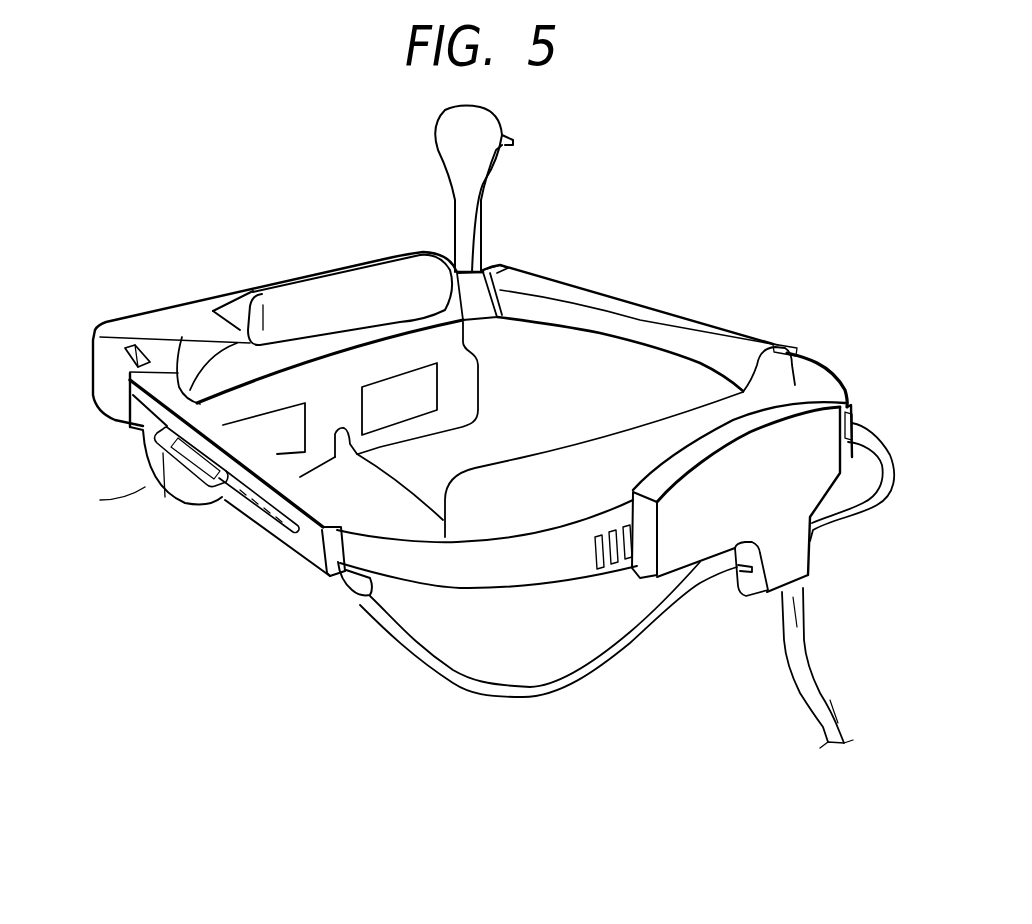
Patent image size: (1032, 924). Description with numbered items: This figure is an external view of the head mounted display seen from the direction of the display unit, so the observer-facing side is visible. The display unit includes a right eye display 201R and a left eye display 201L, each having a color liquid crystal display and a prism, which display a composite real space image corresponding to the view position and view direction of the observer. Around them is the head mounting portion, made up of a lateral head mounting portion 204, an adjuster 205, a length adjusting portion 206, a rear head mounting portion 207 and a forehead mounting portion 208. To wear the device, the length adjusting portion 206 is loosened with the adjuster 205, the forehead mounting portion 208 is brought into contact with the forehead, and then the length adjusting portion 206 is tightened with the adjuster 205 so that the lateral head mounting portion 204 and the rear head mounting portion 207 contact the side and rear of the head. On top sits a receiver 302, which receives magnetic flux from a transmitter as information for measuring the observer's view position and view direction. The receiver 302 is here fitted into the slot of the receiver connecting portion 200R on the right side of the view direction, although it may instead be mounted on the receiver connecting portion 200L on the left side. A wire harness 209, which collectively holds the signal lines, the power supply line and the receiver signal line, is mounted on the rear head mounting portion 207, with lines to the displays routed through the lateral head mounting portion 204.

The receiver connecting portion 200L is at (130, 348).
The receiver connecting portion 200R is at (498, 262).
The left eye display 201L is at (278, 452).
The right eye display 201R is at (420, 407).
The lateral head mounting portion 204 is at (153, 423).
The adjuster 205 is at (177, 459).
The length adjusting portion 206 is at (520, 570).
The rear head mounting portion 207 is at (707, 418).
The forehead mounting portion 208 is at (285, 305).
The wire harness 209 is at (790, 619).
The receiver 302 is at (473, 131).